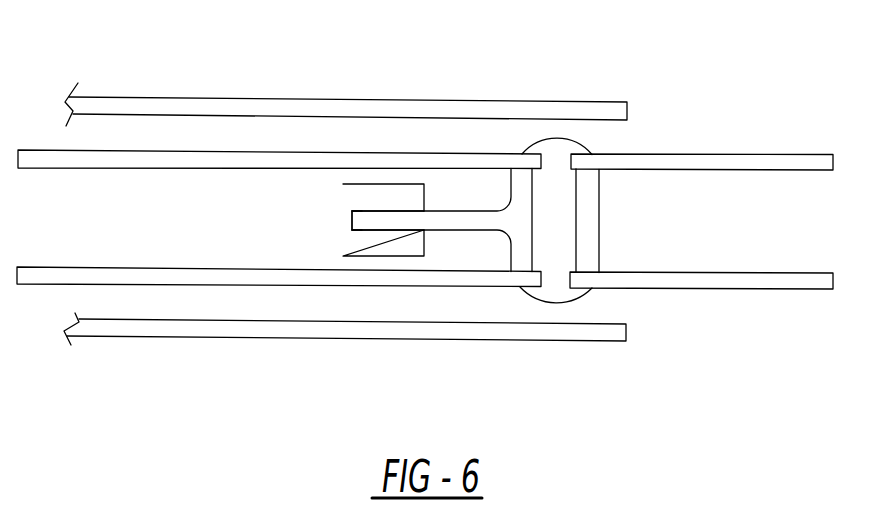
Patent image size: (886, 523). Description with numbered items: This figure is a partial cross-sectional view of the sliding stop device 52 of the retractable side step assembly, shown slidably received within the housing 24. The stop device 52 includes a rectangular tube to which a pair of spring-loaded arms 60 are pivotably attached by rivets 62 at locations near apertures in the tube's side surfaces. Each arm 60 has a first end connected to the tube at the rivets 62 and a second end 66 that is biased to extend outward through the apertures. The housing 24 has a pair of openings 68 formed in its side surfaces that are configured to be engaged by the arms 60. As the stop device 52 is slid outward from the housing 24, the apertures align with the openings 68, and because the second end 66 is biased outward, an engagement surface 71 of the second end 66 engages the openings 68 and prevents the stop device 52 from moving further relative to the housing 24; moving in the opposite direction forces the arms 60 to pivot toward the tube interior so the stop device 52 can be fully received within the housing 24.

The housing 24 is at (572, 112).
The sliding stop device 52 is at (729, 154).
The rivets 62 is at (565, 228).
The spring-loaded arms 60 is at (462, 230).
The second end 66 is at (392, 220).
The openings 68 is at (360, 256).
The engagement surface 71 is at (357, 217).